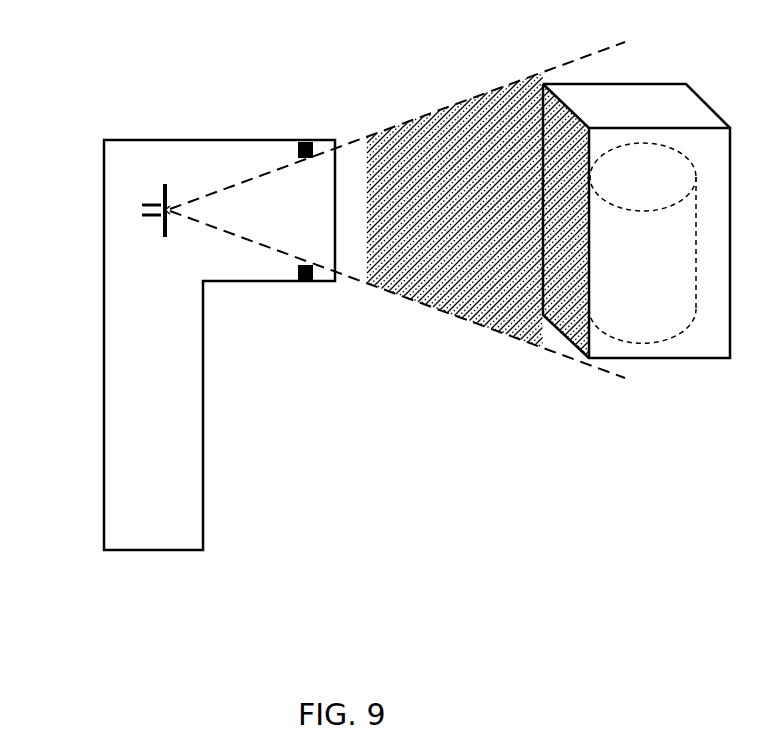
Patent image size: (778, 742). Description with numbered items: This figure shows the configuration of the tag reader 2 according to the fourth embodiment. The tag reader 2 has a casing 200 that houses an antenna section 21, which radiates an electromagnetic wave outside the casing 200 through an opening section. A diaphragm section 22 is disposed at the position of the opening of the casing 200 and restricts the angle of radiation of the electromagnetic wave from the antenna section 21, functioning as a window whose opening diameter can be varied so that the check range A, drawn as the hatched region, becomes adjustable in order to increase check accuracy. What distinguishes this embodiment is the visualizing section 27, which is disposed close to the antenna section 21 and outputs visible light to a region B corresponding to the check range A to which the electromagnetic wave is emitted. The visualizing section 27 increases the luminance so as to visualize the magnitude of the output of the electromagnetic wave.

The tag reader 2 is at (53, 37).
The casing 200 is at (104, 140).
The antenna section 21 is at (163, 190).
The visualizing section 27 is at (153, 218).
The diaphragm section 22 is at (303, 142).
The check range A is at (438, 128).
The visible light region B is at (470, 122).